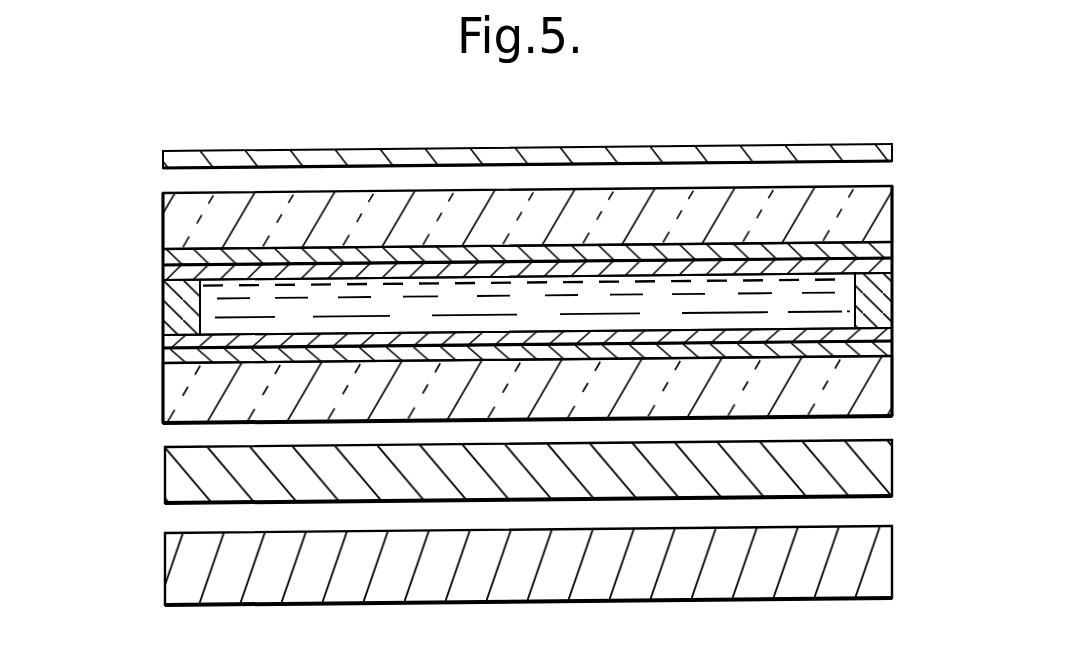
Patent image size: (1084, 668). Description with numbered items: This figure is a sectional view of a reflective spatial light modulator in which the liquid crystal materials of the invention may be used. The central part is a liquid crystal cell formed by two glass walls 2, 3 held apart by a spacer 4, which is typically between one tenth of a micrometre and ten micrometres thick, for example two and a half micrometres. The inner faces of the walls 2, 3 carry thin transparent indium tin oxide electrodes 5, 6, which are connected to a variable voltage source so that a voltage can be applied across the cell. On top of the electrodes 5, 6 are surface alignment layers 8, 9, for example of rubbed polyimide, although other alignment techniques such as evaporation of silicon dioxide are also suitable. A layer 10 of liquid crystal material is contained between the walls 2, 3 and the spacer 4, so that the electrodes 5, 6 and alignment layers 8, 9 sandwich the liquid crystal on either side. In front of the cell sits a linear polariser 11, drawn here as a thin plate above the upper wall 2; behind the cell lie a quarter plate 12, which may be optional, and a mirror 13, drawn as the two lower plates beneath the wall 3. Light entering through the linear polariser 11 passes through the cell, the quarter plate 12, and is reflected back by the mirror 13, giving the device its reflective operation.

The glass wall 2 is at (876, 214).
The glass wall 3 is at (180, 389).
The spacer 4 is at (876, 297).
The indium tin oxide electrode 5 is at (878, 251).
The indium tin oxide electrode 6 is at (880, 352).
The surface alignment layer 8 is at (880, 268).
The surface alignment layer 9 is at (880, 333).
The layer of liquid crystal material 10 is at (178, 309).
The linear polariser 11 is at (733, 153).
The quarter plate 12 is at (176, 478).
The mirror 13 is at (175, 563).